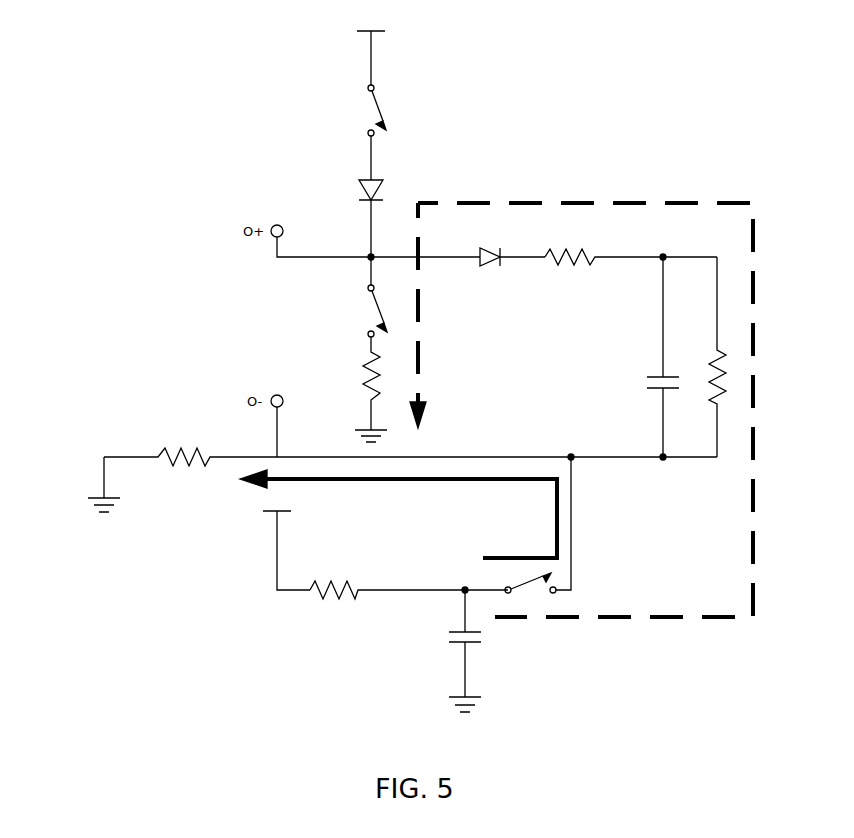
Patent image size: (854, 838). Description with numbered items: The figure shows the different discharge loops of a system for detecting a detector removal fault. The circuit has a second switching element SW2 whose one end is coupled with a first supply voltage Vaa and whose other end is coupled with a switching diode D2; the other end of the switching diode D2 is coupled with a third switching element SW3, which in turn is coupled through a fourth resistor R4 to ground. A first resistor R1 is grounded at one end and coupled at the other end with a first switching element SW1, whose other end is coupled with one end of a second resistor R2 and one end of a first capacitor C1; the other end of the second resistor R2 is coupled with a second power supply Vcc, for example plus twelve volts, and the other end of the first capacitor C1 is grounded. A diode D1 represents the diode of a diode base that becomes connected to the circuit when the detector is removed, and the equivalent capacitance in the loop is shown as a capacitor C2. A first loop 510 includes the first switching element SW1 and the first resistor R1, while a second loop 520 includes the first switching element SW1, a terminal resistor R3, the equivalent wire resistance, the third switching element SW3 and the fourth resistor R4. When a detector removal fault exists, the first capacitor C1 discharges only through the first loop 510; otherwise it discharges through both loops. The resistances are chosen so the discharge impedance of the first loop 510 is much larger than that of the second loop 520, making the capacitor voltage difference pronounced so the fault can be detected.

The first loop 510 is at (505, 483).
The second loop 520 is at (635, 203).
The first resistor R1 is at (410, 447).
The second resistor R2 is at (409, 578).
The terminal resistor R3 is at (729, 357).
The fourth resistor R4 is at (381, 383).
The first capacitor C1 is at (449, 652).
The equivalent capacitance C2 is at (648, 357).
The diode D1 is at (512, 247).
The switching diode D2 is at (380, 210).
The first switching element SW1 is at (509, 525).
The second switching element SW2 is at (353, 110).
The third switching element SW3 is at (351, 311).
The first supply voltage Vaa is at (371, 47).
The second power supply Vcc is at (286, 541).